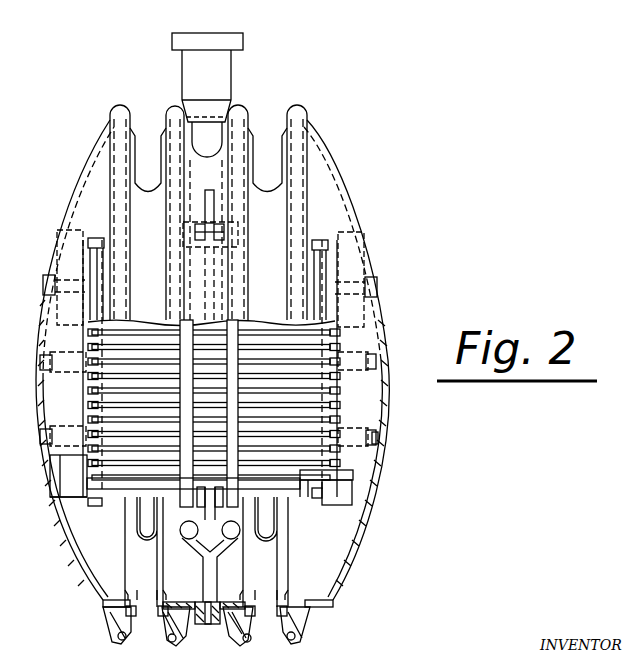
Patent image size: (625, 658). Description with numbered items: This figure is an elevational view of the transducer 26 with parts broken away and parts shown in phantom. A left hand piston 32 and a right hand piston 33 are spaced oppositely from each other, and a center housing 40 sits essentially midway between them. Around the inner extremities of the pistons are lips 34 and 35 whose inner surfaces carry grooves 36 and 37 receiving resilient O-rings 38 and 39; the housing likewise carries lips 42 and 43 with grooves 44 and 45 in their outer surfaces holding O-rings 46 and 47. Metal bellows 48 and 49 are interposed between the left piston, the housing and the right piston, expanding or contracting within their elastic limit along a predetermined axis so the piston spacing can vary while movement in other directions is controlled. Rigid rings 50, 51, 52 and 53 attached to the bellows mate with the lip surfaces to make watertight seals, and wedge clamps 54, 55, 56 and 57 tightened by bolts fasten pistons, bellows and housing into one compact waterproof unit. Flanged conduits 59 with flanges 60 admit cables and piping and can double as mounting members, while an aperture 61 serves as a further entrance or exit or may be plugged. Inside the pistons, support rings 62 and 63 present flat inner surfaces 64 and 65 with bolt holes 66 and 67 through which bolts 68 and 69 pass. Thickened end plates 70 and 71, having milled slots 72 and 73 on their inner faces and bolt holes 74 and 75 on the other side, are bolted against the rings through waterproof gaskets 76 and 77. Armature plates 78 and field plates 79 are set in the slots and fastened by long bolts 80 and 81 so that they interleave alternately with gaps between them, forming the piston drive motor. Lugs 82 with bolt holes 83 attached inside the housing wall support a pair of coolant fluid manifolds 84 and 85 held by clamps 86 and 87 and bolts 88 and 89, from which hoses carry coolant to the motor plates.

The pump assembly 26 is at (358, 336).
The left hand piston 32 is at (75, 360).
The right hand piston 33 is at (346, 360).
The lip 34 is at (100, 607).
The lip 35 is at (319, 606).
The groove 36 is at (107, 625).
The groove 37 is at (291, 595).
The O-ring 38 is at (117, 589).
The O-ring 39 is at (285, 627).
The center housing 40 is at (206, 221).
The lip 42 is at (181, 626).
The lip 43 is at (233, 626).
The groove 44 is at (174, 595).
The groove 45 is at (238, 597).
The O-ring 46 is at (164, 632).
The O-ring 47 is at (234, 635).
The bellows 48 is at (147, 212).
The bellows 49 is at (267, 212).
The rigid ring 50 is at (139, 605).
The rigid ring 51 is at (156, 613).
The rigid ring 52 is at (257, 605).
The rigid ring 53 is at (272, 613).
The wedge clamp 54 is at (114, 645).
The wedge clamp 55 is at (175, 646).
The wedge clamp 56 is at (254, 646).
The wedge clamp 57 is at (300, 645).
The entrance and exit conduit 59 is at (190, 86).
The flange 60 is at (191, 37).
The aperture 61 is at (204, 604).
The support ring 62 is at (56, 443).
The support ring 63 is at (337, 499).
The flat inner surface 64 is at (78, 368).
The flat inner surface 65 is at (341, 368).
The bolt hole 66 is at (63, 443).
The bolt hole 67 is at (357, 428).
The bolt 68 is at (59, 488).
The bolt 69 is at (386, 436).
The end plate 70 is at (68, 476).
The end plate 71 is at (220, 400).
The milled slot 72 is at (68, 485).
The milled slot 73 is at (326, 478).
The bolt hole 74 is at (63, 349).
The bolt hole 75 is at (357, 351).
The gasket 76 is at (73, 312).
The gasket 77 is at (358, 293).
The armature plate 78 is at (193, 498).
The field plate 79 is at (305, 495).
The long bolt 80 is at (92, 515).
The long bolt 81 is at (321, 499).
The lug 82 is at (202, 247).
The bolt hole 83 is at (210, 220).
The coolant fluid manifold 84 is at (177, 403).
The coolant fluid manifold 85 is at (237, 397).
The clamp 86 is at (153, 552).
The clamp 87 is at (264, 549).
The bolt 88 is at (203, 222).
The bolt 89 is at (210, 544).